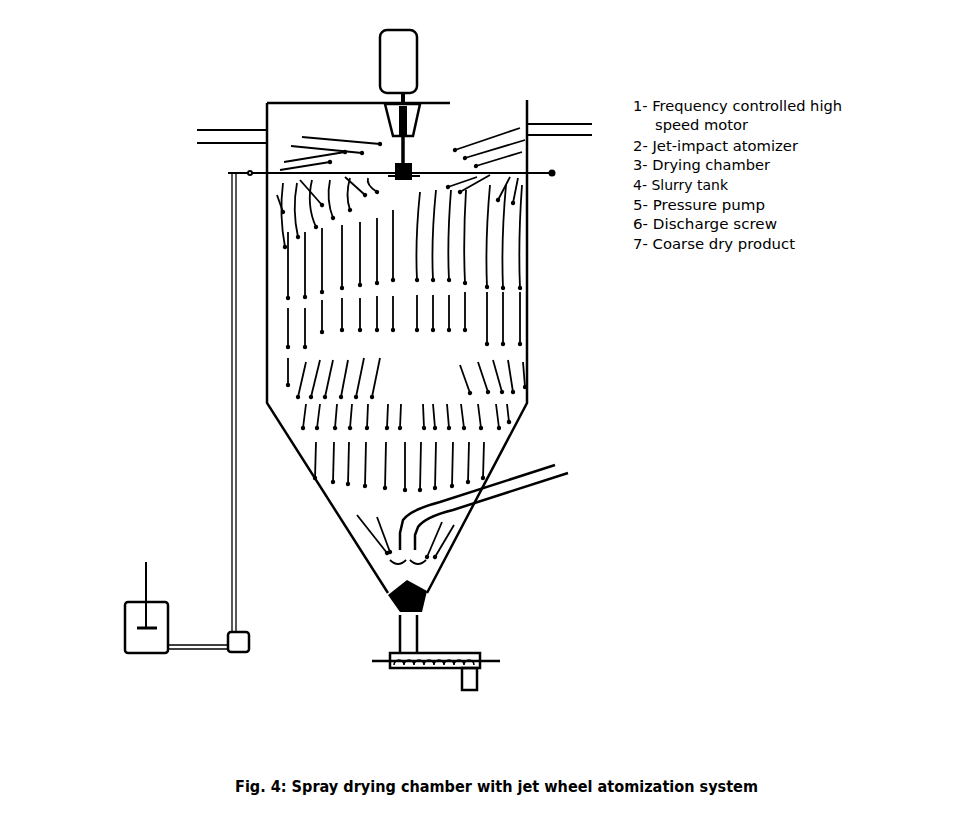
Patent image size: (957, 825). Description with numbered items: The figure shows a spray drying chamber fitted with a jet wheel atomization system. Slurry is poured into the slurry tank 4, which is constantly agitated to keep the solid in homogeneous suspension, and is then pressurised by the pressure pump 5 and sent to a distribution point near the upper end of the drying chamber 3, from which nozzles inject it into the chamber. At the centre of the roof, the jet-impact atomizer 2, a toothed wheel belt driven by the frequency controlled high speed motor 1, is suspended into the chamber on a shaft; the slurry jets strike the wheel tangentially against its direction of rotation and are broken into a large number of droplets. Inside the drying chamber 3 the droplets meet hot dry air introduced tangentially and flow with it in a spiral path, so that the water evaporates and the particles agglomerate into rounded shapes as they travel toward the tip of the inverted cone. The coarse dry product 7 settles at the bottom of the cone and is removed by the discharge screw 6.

The frequency controlled high speed motor 1 is at (407, 24).
The jet-impact atomizer 2 is at (417, 150).
The drying chamber 3 is at (417, 356).
The slurry tank 4 is at (125, 630).
The pressure pump 5 is at (237, 652).
The discharge screw 6 is at (397, 668).
The coarse dry product 7 is at (467, 690).